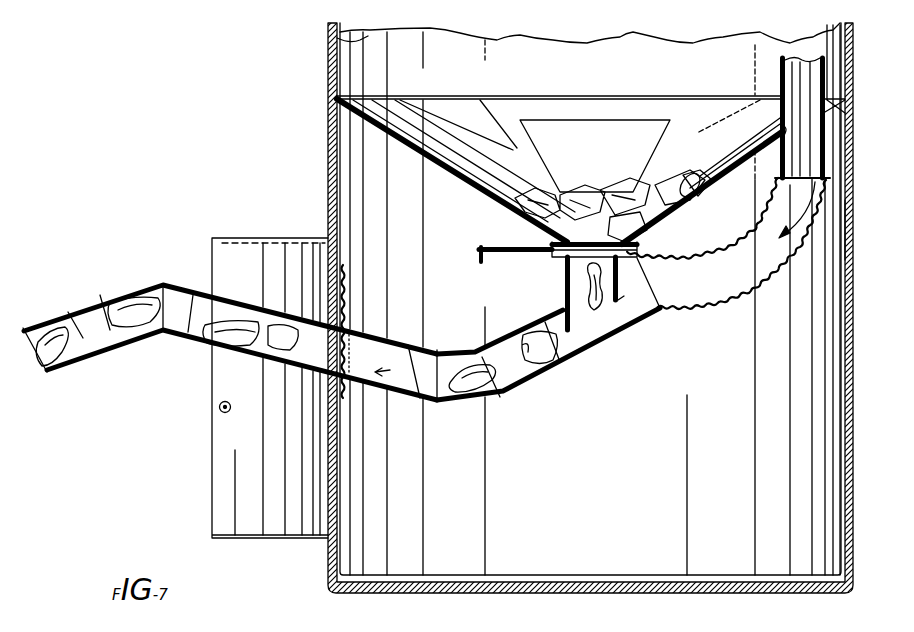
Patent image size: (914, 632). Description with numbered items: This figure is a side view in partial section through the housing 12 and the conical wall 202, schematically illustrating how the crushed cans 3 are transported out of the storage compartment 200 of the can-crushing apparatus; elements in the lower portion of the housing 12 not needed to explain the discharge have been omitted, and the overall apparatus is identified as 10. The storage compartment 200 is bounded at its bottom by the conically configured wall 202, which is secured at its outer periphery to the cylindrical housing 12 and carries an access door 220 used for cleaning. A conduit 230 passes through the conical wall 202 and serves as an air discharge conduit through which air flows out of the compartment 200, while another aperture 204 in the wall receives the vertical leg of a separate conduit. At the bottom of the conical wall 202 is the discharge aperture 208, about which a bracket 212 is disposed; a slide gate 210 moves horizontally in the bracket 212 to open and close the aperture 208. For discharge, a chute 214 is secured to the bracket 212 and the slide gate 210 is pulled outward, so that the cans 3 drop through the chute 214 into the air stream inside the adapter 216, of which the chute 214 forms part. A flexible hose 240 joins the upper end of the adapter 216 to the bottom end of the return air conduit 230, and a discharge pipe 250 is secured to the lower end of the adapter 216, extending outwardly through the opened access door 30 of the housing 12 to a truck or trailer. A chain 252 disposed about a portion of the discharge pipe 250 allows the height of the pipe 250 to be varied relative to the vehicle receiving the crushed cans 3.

The waste container 10 is at (862, 86).
The housing 12 is at (853, 214).
The access door 30 is at (240, 253).
The cans 3 is at (47, 360).
The storage compartment 200 is at (370, 58).
The conical wall 202 is at (443, 103).
The aperture 204 is at (782, 124).
The discharge aperture 208 is at (547, 227).
The slide gate 210 is at (505, 254).
The bracket 212 is at (640, 245).
The chute 214 is at (566, 288).
The adapter 216 is at (612, 338).
The access door 220 is at (648, 153).
The conduit 230 is at (782, 67).
The flexible conduit or hose 240 is at (755, 305).
The discharge pipe 250 is at (183, 340).
The chain 252 is at (345, 283).